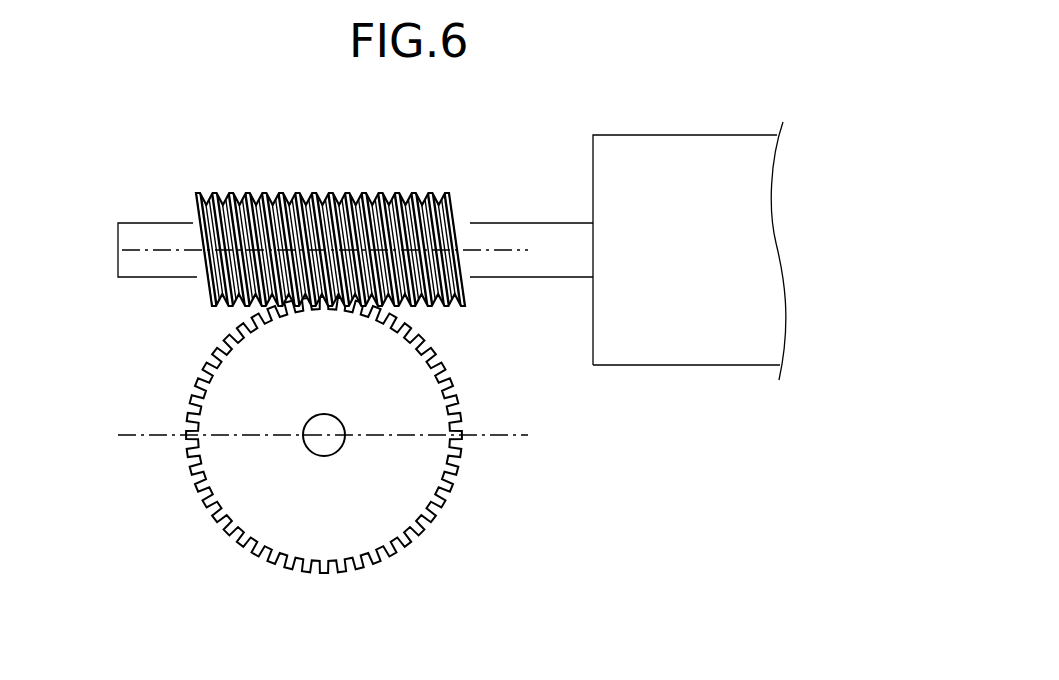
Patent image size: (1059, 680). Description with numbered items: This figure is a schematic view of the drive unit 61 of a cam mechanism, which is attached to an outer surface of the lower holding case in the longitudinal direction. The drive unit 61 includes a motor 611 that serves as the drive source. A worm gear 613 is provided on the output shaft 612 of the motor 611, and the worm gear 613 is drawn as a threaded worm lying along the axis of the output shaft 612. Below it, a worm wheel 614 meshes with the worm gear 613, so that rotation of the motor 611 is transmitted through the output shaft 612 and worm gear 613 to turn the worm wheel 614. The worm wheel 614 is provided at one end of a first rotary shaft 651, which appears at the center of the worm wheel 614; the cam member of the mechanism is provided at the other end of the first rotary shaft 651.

The drive unit 61 is at (315, 202).
The motor 611 is at (702, 367).
The output shaft 612 is at (118, 237).
The worm gear 613 is at (350, 195).
The worm wheel 614 is at (340, 547).
The first rotary shaft 651 is at (309, 455).